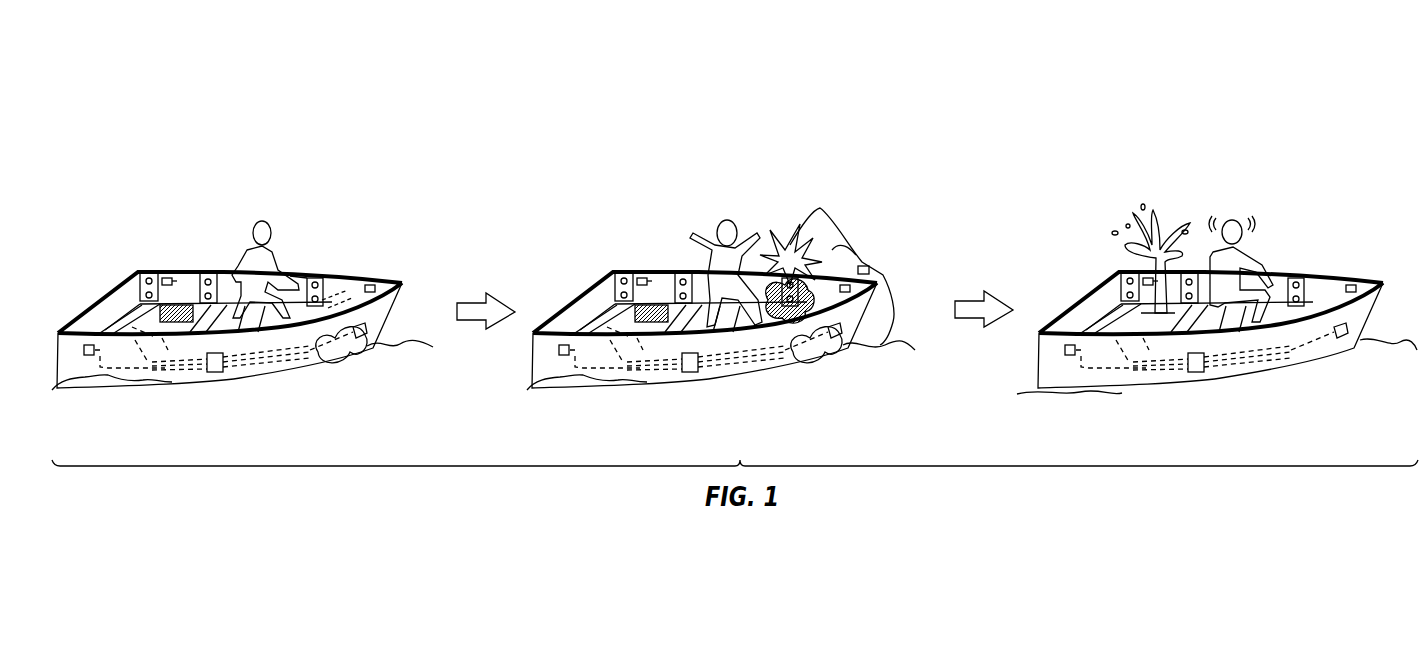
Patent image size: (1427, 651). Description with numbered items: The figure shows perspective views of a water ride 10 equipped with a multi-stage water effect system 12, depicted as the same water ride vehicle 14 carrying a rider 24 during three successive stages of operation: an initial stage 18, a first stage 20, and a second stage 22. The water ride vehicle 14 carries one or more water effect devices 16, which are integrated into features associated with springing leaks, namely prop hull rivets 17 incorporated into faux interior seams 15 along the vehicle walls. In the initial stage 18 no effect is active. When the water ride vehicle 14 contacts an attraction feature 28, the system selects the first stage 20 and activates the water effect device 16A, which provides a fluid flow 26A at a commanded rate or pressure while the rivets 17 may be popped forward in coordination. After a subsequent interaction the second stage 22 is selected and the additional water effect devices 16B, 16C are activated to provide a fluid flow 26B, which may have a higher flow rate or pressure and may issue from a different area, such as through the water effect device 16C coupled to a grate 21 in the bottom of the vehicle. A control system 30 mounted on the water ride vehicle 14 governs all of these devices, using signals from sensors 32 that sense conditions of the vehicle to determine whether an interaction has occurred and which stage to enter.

The water ride 10 is at (735, 239).
The multi-stage water effect system 12 is at (720, 243).
The water ride vehicle 14 is at (187, 270).
The faux interior seams 15 is at (344, 277).
The water effect devices 16 is at (620, 268).
The water effect device 16A is at (313, 277).
The additional water effect device 16B is at (709, 244).
The water effect device 16C is at (162, 327).
The prop hull rivets 17 is at (298, 276).
The initial stage 18 is at (242, 256).
The first stage 20 is at (721, 256).
The grate 21 is at (158, 313).
The second stage 22 is at (1217, 258).
The rider 24 is at (765, 250).
The fluid flow 26A is at (851, 313).
The fluid flow 26B is at (1169, 234).
The attraction feature 28 is at (818, 208).
The control system 30 is at (215, 372).
The sensors 32 is at (167, 278).